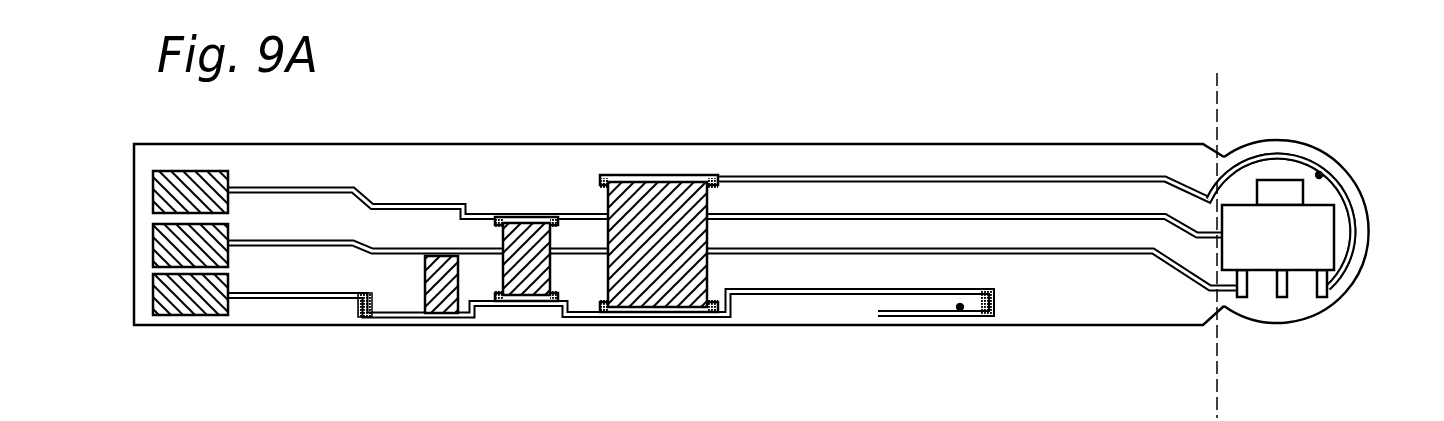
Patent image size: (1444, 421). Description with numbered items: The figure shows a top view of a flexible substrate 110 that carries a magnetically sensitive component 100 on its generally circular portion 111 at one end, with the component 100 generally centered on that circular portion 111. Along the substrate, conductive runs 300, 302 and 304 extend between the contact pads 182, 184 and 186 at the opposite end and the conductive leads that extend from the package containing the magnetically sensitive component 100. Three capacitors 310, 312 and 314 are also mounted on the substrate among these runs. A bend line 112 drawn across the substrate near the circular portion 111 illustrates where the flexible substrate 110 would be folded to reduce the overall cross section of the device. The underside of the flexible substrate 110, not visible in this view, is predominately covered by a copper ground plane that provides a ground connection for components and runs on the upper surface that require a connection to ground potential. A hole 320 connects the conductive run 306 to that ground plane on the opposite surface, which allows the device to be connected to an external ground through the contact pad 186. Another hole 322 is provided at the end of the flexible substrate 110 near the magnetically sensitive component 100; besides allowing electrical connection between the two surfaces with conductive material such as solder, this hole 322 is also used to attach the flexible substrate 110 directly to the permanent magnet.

The magnetically sensitive component 100 is at (1320, 250).
The flexible substrate 110 is at (438, 157).
The circular portion 111 is at (1272, 325).
The bend line 112 is at (1217, 105).
The contact pad 182 is at (153, 186).
The contact pad 184 is at (153, 240).
The contact pad 186 is at (153, 290).
The conductive run 300 is at (750, 178).
The conductive run 302 is at (885, 213).
The conductive run 304 is at (1005, 252).
The conductive run 306 is at (275, 300).
The capacitor 310 is at (662, 293).
The capacitor 312 is at (538, 300).
The capacitor 314 is at (443, 298).
The hole 320 is at (960, 307).
The hole 322 is at (1322, 180).